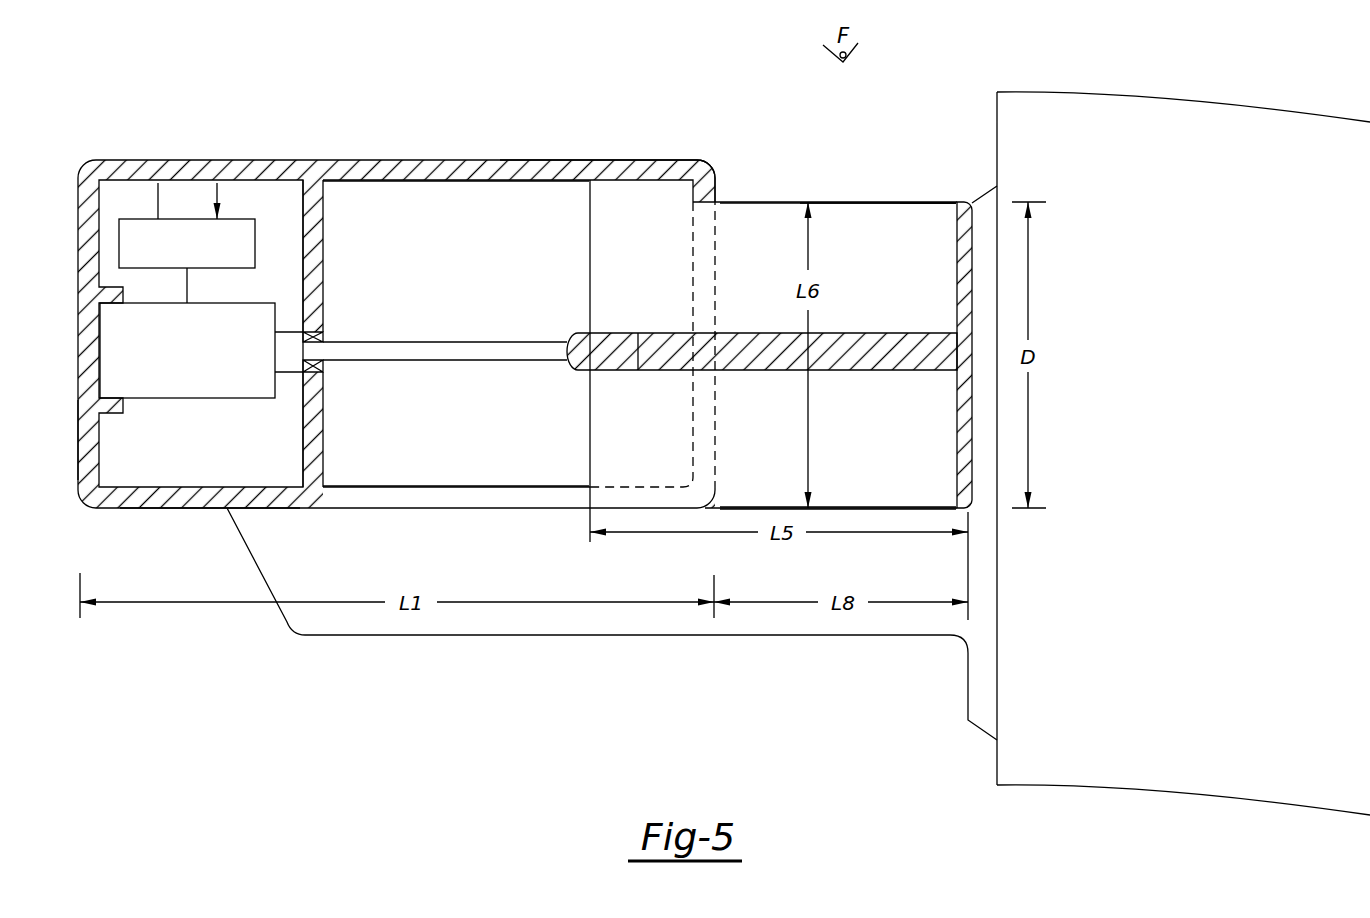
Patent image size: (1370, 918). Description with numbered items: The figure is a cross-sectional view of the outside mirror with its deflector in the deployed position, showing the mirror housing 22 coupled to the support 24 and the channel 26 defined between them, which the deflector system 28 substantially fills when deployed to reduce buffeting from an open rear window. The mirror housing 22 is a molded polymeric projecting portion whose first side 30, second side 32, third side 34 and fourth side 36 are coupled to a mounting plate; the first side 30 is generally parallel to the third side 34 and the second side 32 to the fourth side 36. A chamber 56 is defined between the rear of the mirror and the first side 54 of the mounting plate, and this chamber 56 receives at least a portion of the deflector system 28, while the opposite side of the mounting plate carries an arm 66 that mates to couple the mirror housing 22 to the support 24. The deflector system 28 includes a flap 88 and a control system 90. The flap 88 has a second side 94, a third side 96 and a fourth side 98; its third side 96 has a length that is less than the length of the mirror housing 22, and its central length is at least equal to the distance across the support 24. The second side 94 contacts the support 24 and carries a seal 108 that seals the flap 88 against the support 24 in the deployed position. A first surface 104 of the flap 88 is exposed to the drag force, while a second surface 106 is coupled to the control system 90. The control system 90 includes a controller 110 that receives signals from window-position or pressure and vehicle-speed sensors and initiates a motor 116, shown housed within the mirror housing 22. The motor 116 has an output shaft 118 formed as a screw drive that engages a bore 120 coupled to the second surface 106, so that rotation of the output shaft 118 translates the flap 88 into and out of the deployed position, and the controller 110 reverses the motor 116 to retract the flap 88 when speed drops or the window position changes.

The mirror housing 22 is at (612, 88).
The support 24 is at (960, 672).
The channel 26 is at (745, 186).
The deflector system 28 is at (900, 165).
The first side 30 is at (488, 160).
The second side 32 is at (713, 168).
The third side 34 is at (177, 509).
The fourth side 36 is at (78, 447).
The first side of the mounting plate 54 is at (494, 250).
The chamber 56 is at (380, 190).
The arm 66 is at (455, 636).
The flap 88 is at (930, 200).
The control system 90 is at (201, 379).
The second side of the flap 94 is at (955, 435).
The third side of the flap 96 is at (750, 508).
The fourth side of the flap 98 is at (590, 415).
The first surface of the flap 104 is at (867, 202).
The second surface of the flap 106 is at (841, 438).
The seal 108 is at (960, 200).
The controller 110 is at (256, 245).
The motor 116 is at (172, 364).
The output shaft 118 is at (467, 342).
The bore 120 is at (907, 333).